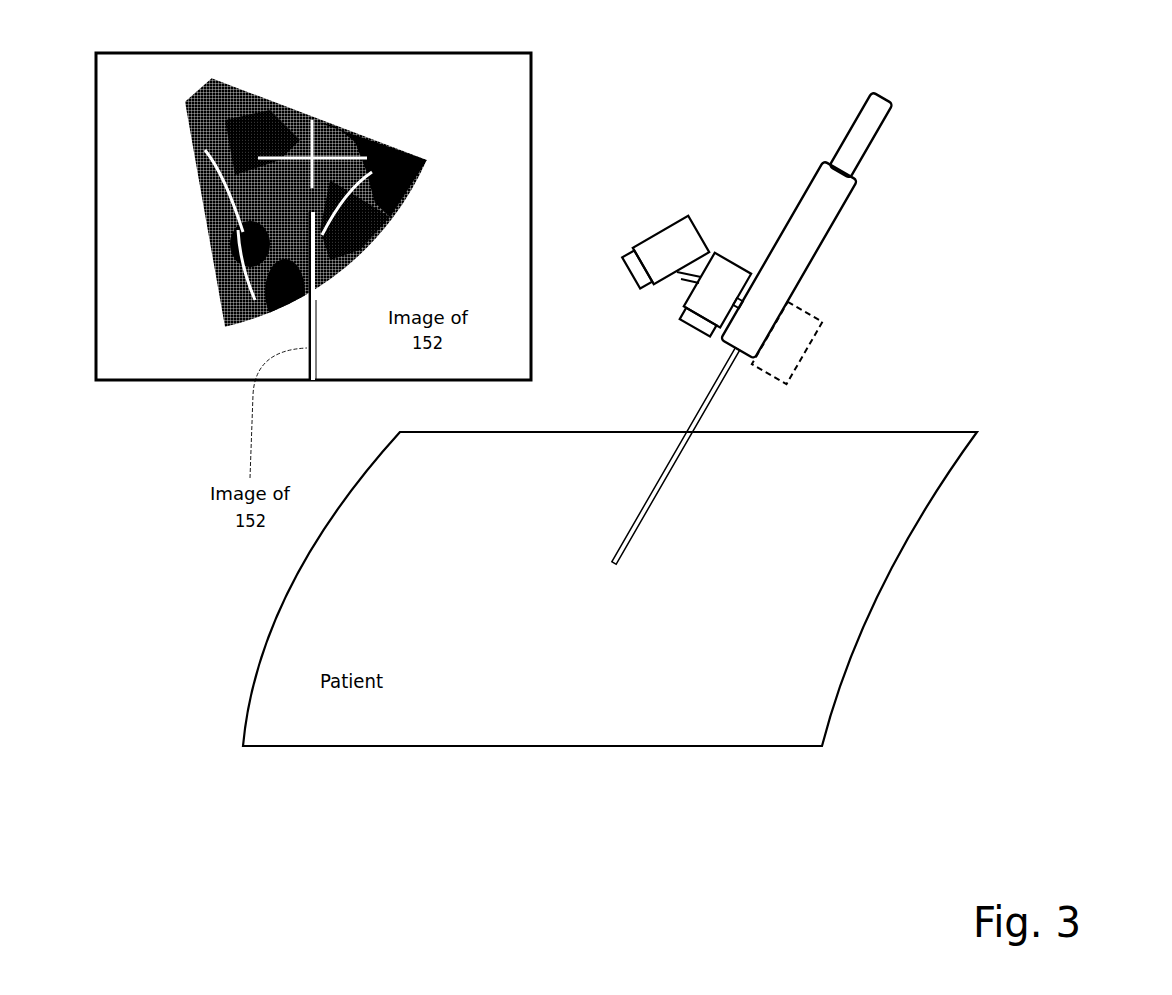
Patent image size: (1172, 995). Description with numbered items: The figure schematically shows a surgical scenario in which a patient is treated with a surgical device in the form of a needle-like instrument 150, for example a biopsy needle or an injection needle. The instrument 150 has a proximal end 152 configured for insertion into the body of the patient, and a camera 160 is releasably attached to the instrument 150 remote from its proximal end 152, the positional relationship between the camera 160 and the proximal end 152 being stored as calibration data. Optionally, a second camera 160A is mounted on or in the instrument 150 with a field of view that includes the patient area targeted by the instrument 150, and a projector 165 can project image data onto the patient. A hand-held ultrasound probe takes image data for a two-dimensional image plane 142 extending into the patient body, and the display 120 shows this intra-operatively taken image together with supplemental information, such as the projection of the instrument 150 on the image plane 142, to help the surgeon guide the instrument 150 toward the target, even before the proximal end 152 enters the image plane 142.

The display 120 is at (497, 112).
The image plane 142 is at (390, 217).
The needle-like instrument 150 is at (810, 223).
The proximal end 152 is at (610, 566).
The camera 160 is at (665, 253).
The second camera 160A is at (717, 297).
The projector 165 is at (787, 343).